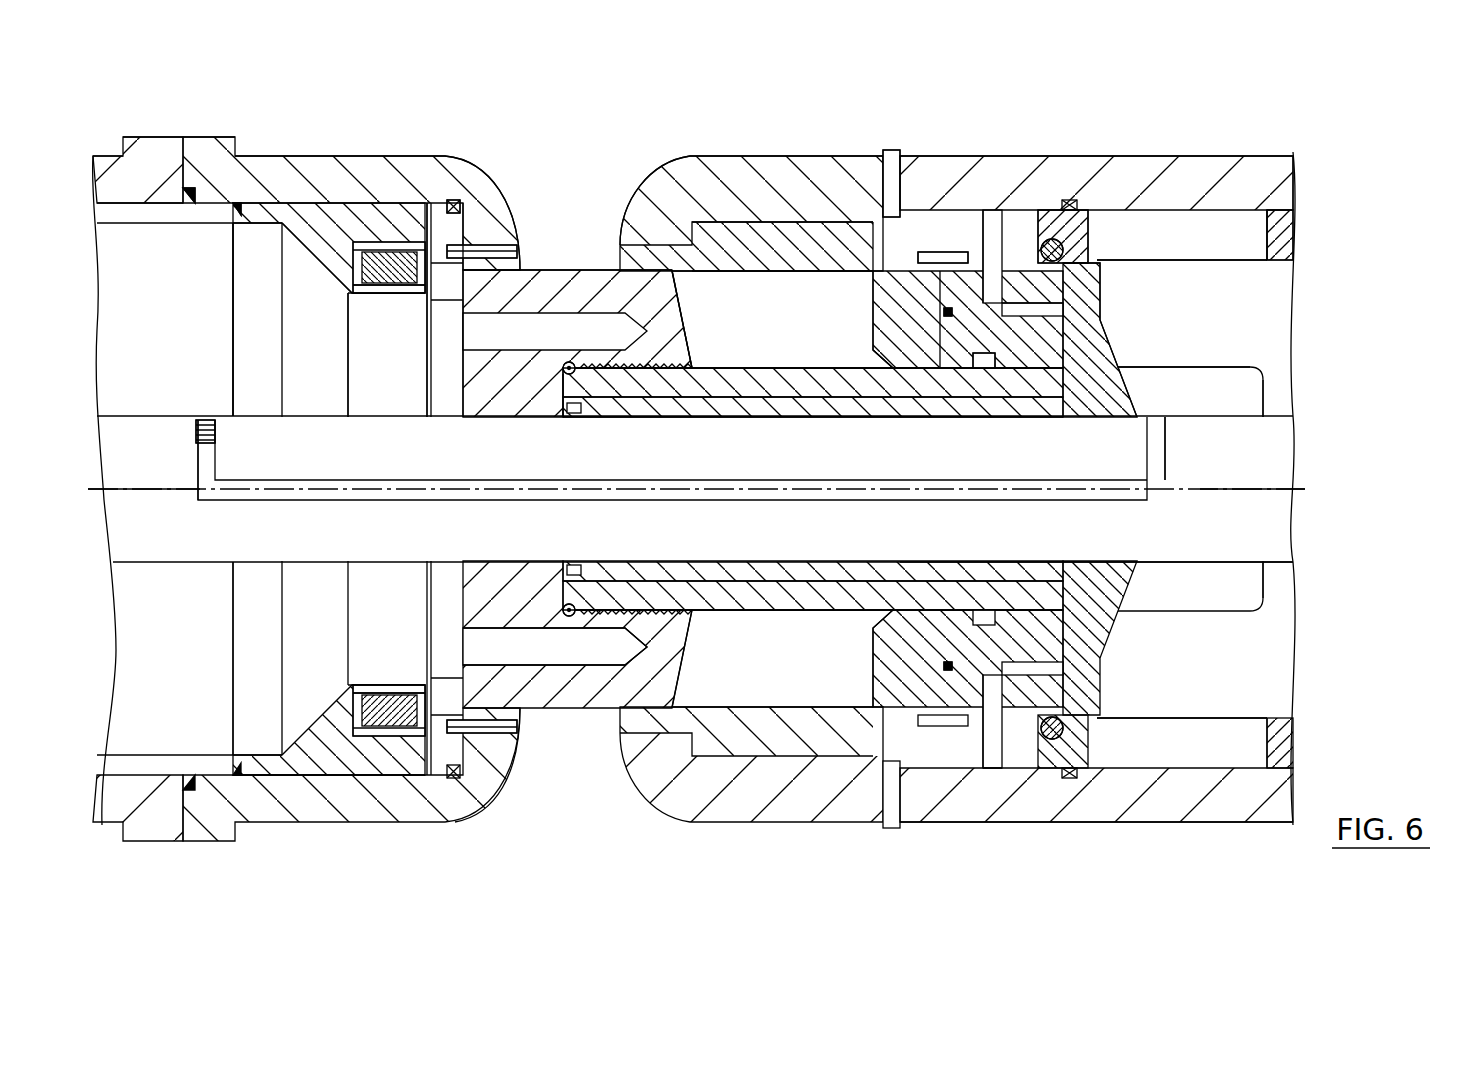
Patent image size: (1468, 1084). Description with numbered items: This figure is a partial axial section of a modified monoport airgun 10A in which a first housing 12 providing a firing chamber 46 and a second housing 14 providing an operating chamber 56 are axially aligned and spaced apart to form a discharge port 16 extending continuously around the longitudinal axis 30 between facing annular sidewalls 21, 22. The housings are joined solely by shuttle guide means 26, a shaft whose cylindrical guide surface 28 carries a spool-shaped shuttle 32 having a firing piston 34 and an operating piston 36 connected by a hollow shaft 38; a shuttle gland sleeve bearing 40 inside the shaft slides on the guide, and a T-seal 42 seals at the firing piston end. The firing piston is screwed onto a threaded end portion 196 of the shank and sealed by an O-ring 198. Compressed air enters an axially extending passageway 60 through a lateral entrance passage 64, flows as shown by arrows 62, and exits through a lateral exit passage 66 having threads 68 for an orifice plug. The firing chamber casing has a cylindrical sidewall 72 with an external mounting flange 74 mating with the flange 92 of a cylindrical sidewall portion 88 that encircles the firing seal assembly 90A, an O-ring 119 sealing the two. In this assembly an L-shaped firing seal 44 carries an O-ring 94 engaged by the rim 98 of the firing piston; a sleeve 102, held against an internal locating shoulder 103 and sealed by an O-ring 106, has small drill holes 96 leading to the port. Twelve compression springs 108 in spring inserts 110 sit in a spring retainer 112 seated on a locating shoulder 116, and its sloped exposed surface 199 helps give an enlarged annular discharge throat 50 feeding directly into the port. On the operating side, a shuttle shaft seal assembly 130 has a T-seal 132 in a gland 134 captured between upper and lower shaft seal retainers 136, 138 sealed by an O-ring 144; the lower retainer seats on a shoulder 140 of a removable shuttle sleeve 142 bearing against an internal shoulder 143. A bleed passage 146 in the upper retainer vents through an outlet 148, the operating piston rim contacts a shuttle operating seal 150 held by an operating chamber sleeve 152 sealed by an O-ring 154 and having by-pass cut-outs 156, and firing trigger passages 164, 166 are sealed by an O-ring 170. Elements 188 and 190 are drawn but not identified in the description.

The monoport airgun 10A is at (1200, 80).
The first housing 12 is at (100, 148).
The second housing 14 is at (1140, 150).
The discharge port 16 is at (597, 192).
The annular sidewall 21 is at (468, 205).
The annular sidewall 22 is at (650, 175).
The shuttle guide means 26 is at (192, 572).
The guide surface 28 is at (920, 565).
The longitudinal axis 30 is at (1255, 488).
The shuttle 32 is at (790, 362).
The firing piston 34 is at (575, 262).
The operating piston 36 is at (1103, 310).
The hollow shaft 38 is at (742, 367).
The shuttle gland sleeve bearing 40 is at (720, 412).
The T-seal 42 is at (590, 412).
The firing seal 44 is at (432, 320).
The firing chamber 46 is at (180, 331).
The discharge throat 50 is at (400, 391).
The operating chamber 56 is at (1220, 338).
The axially extending passageway 60 is at (1030, 495).
The arrow 62 is at (185, 378).
The lateral entrance passage 64 is at (1165, 450).
The lateral exit passage 66 is at (200, 462).
The threads 68 is at (195, 433).
The cylindrical sidewall 72 is at (95, 215).
The external mounting flange 74 is at (152, 136).
The cylindrical sidewall portion 88 is at (340, 155).
The firing seal assembly 90A is at (360, 343).
The external mounting flange 92 is at (212, 136).
The firing seal O-ring 94 is at (470, 300).
The small drill holes 96 is at (500, 243).
The rim 98 is at (470, 672).
The sleeve 102 is at (478, 760).
The internal locating shoulder 103 is at (478, 225).
The O-ring 106 is at (453, 199).
The compression springs 108 is at (353, 280).
The spring inserts 110 is at (380, 293).
The spring retainer 112 is at (375, 793).
The locating shoulder 116 is at (238, 217).
The O-ring 119 is at (187, 205).
The shuttle shaft seal assembly 130 is at (870, 350).
The T-seal 132 is at (985, 385).
The gland 134 is at (1012, 372).
The upper shaft seal retainer 136 is at (1088, 238).
The lower shaft seal retainer 138 is at (900, 290).
The shoulder 140 is at (872, 228).
The shuttle sleeve 142 is at (772, 240).
The internal shoulder 143 is at (732, 220).
The O-ring 144 is at (942, 666).
The bleed passage 146 is at (1015, 235).
The outlet 148 is at (1005, 225).
The shuttle operating seal 150 is at (1088, 255).
The operating chamber sleeve 152 is at (1293, 232).
The O-ring 154 is at (1062, 795).
The by-pass cut-outs 156 is at (1238, 262).
The firing trigger passage 164 is at (1153, 800).
The firing trigger passage 166 is at (985, 694).
The O-ring 170 is at (972, 795).
The plate 188 is at (948, 252).
The passage 190 is at (890, 150).
The threaded end portion 196 is at (665, 606).
The O-ring 198 is at (598, 572).
The exposed surface 199 is at (283, 225).